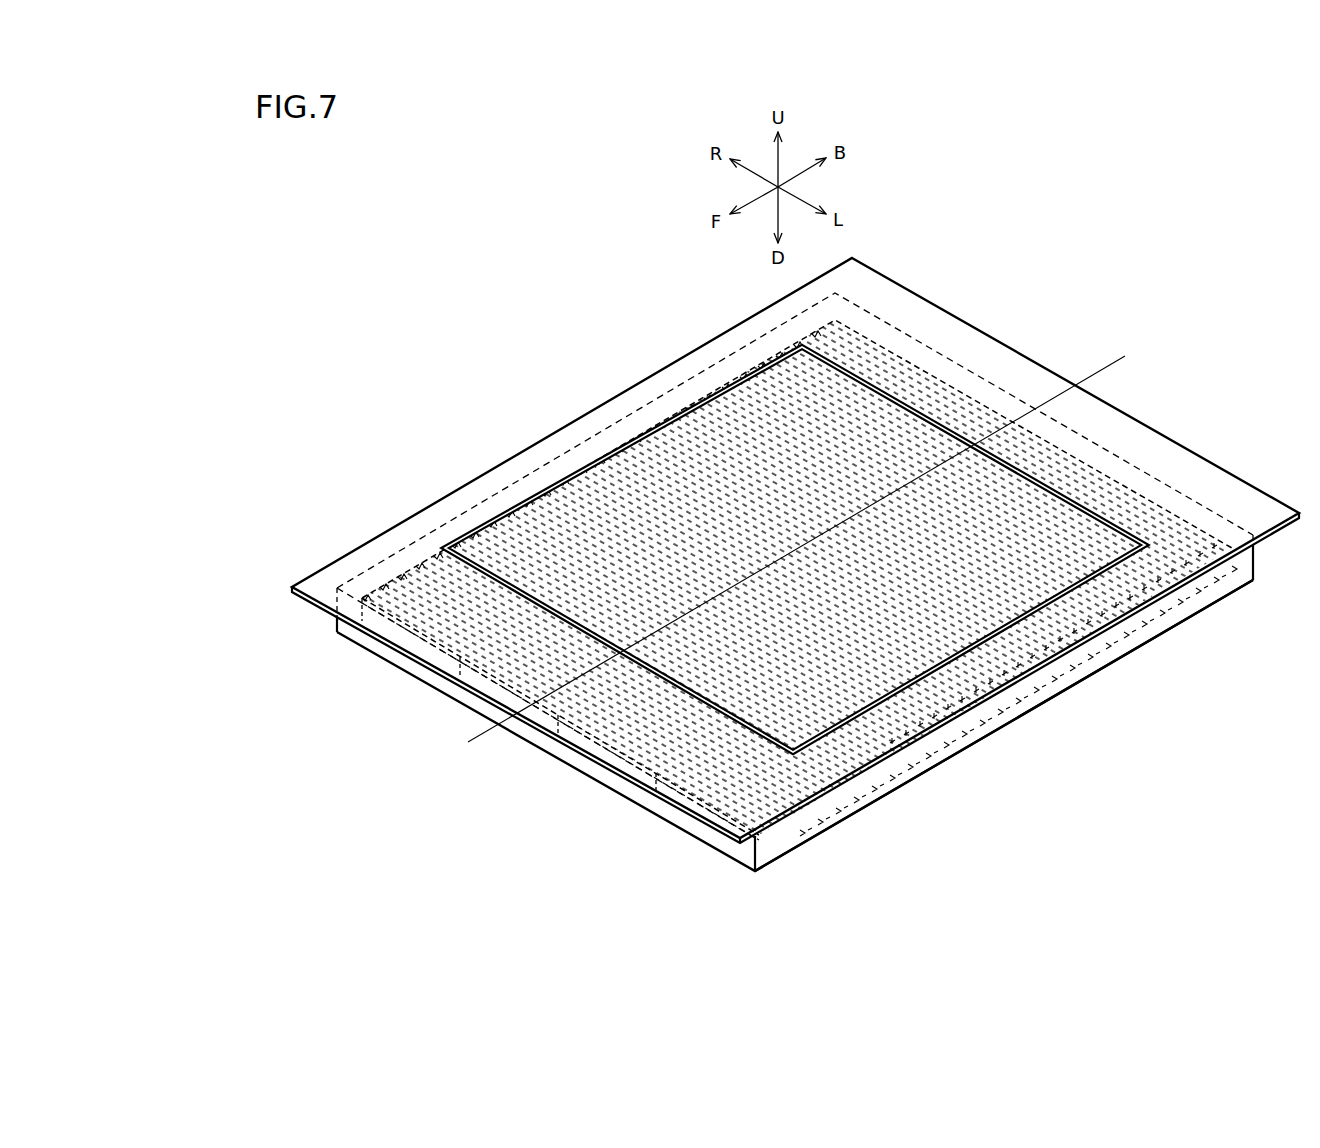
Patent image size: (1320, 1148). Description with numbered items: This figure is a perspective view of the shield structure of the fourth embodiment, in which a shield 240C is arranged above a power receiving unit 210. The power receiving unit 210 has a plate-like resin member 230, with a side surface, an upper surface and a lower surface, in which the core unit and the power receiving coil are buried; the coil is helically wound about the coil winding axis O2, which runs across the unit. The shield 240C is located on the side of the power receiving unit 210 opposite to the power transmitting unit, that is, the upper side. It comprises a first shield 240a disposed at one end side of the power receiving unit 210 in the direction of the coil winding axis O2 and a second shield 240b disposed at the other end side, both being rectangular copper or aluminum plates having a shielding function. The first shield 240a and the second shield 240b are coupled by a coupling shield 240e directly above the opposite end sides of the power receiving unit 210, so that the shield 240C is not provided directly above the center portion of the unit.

The power receiving unit 210 is at (1022, 735).
The resin member 230 is at (1067, 675).
The shield 240C is at (1192, 438).
The first shield 240a is at (552, 715).
The second shield 240b is at (920, 325).
The coupling shield 240e is at (596, 432).
The coil winding axis O2 is at (1108, 367).